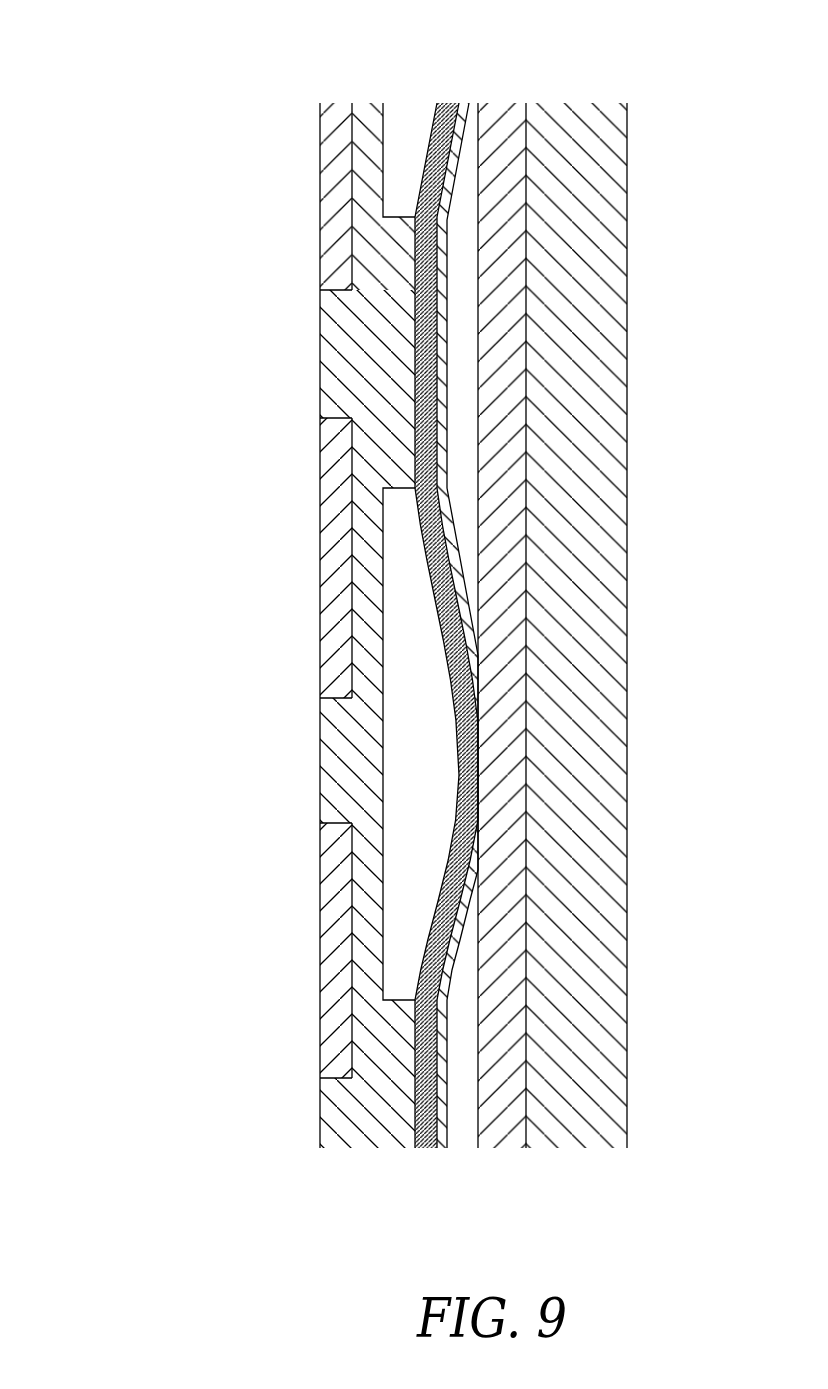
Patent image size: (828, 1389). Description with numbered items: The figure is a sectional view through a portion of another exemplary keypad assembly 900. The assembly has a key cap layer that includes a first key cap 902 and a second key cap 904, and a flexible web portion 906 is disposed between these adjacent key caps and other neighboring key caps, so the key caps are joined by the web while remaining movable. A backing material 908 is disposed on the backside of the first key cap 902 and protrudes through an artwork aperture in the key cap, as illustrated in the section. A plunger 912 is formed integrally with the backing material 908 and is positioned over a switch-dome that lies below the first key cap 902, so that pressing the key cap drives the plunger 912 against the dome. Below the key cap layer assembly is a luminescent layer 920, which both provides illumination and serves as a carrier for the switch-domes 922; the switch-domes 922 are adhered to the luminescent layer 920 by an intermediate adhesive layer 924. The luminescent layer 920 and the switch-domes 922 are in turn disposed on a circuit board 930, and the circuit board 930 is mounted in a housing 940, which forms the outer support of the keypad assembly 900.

The keypad assembly 900 is at (136, 60).
The first key cap 902 is at (322, 226).
The second key cap 904 is at (352, 1013).
The flexible web portion 906 is at (334, 726).
The backing material 908 is at (328, 366).
The plunger 912 is at (396, 494).
The luminescent layer 920 is at (448, 607).
The switch-domes 922 is at (440, 445).
The intermediate adhesive layer 924 is at (526, 777).
The circuit board 930 is at (510, 545).
The housing 940 is at (582, 468).